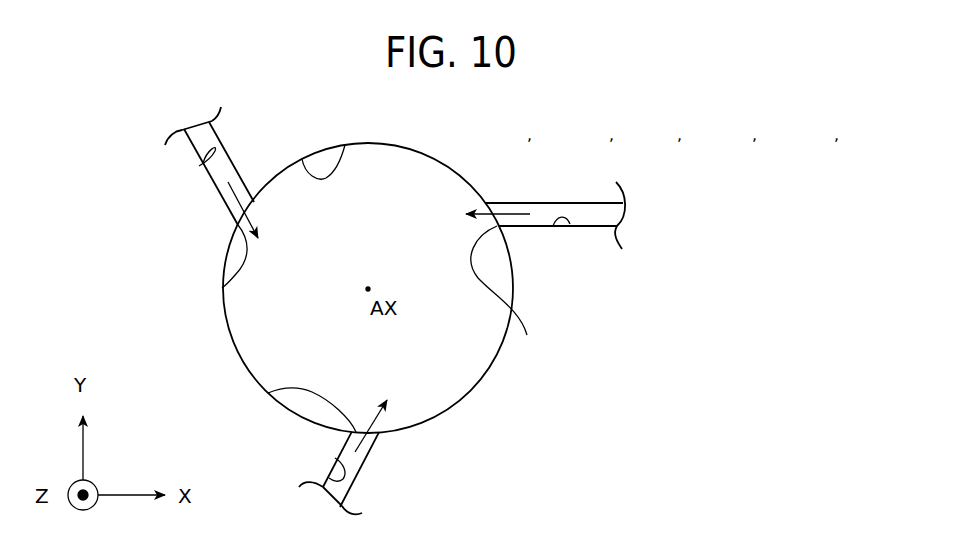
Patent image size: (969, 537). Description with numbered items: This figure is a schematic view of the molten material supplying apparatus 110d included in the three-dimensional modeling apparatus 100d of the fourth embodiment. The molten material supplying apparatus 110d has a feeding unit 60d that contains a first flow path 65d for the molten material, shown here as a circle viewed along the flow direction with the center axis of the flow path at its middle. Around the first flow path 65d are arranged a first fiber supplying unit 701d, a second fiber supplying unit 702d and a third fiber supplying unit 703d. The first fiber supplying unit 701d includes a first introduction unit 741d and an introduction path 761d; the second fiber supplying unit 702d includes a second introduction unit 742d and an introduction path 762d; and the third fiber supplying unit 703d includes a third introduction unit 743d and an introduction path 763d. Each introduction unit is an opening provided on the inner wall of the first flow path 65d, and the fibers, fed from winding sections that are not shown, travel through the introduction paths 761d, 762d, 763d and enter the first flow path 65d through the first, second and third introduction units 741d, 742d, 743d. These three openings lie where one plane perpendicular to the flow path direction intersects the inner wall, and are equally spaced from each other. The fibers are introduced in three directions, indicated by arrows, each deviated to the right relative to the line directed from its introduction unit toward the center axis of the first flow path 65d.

The three-dimensional modeling apparatus 100d is at (522, 144).
The molten material supplying apparatus 110d is at (603, 144).
The feeding unit 60d is at (672, 144).
The first flow path 65d is at (345, 145).
The first fiber supplying unit 701d is at (748, 144).
The second fiber supplying unit 702d is at (830, 144).
The third fiber supplying unit 703d is at (908, 144).
The first introduction unit 741d is at (222, 288).
The second introduction unit 742d is at (268, 393).
The third introduction unit 743d is at (527, 335).
The introduction path 761d is at (203, 163).
The introduction path 762d is at (335, 458).
The introduction path 763d is at (570, 226).